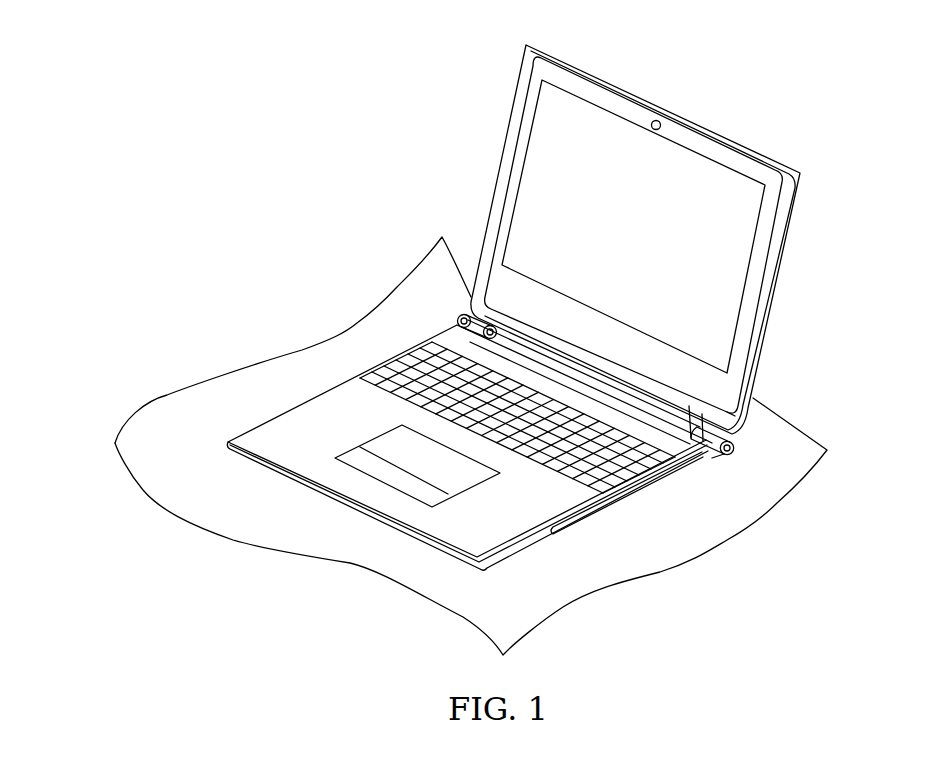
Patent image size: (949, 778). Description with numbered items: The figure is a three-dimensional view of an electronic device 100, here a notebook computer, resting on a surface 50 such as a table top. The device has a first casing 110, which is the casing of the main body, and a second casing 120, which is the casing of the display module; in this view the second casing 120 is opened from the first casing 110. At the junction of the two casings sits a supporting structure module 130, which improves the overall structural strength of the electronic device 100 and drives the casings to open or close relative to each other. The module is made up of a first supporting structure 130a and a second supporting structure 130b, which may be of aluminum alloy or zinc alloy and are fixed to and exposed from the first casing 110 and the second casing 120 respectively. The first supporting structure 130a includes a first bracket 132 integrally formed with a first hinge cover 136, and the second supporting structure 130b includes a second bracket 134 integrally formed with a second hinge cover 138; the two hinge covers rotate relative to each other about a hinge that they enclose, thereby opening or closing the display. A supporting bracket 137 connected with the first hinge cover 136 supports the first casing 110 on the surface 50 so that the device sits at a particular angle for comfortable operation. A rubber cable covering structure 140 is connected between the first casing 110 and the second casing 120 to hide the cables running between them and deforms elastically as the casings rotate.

The electronic device 100 is at (888, 627).
The first casing 110 is at (280, 430).
The second casing 120 is at (751, 253).
The supporting structure module 130 is at (851, 465).
The first supporting structure 130a is at (696, 423).
The second supporting structure 130b is at (634, 235).
The first bracket 132 is at (711, 460).
The second bracket 134 is at (765, 317).
The first hinge cover 136 is at (742, 432).
The supporting bracket 137 is at (712, 460).
The second hinge cover 138 is at (717, 415).
The cable covering structure 140 is at (547, 333).
The surface 50 is at (783, 477).